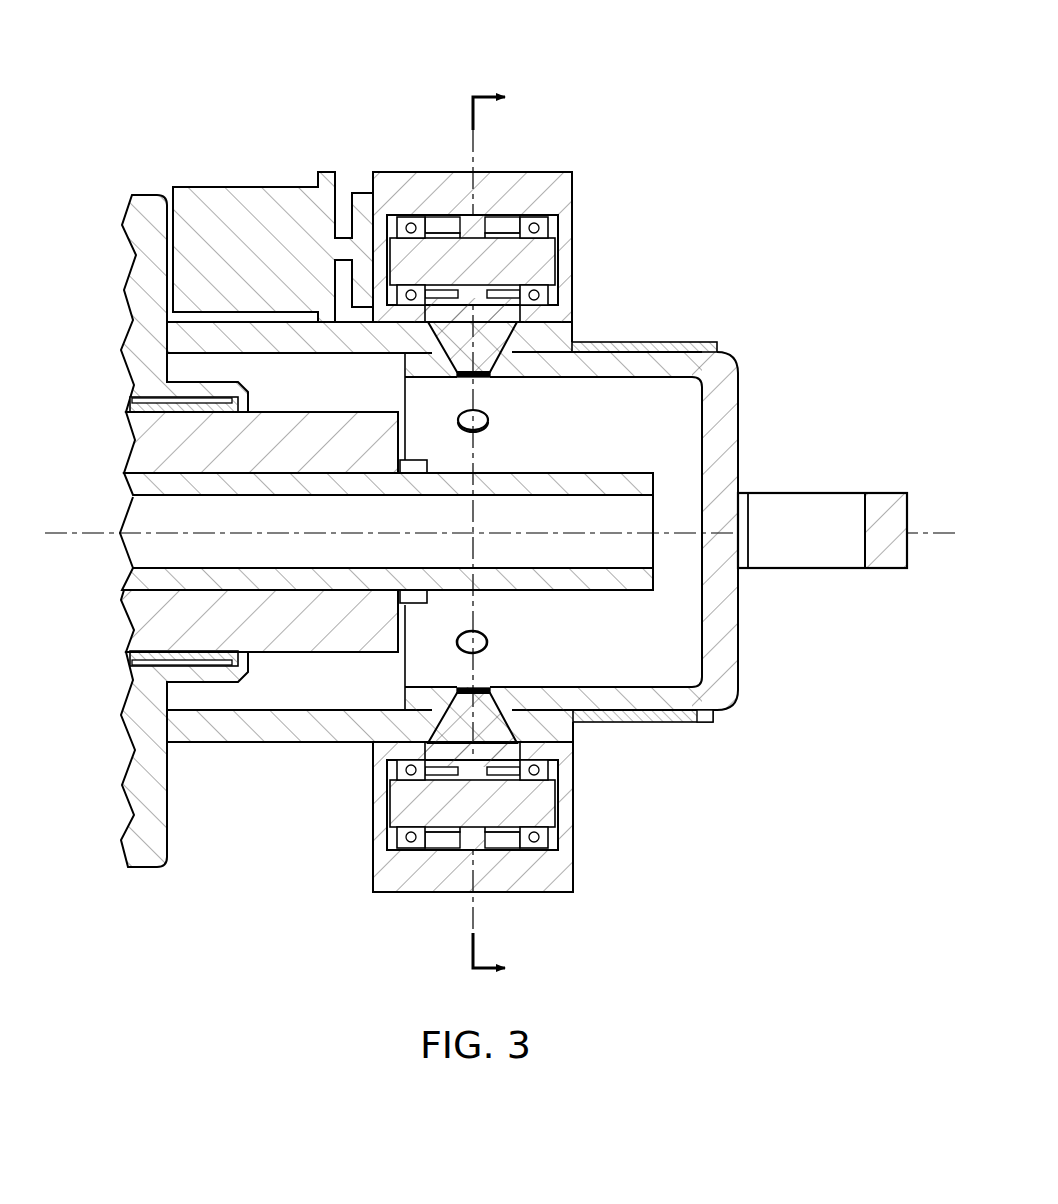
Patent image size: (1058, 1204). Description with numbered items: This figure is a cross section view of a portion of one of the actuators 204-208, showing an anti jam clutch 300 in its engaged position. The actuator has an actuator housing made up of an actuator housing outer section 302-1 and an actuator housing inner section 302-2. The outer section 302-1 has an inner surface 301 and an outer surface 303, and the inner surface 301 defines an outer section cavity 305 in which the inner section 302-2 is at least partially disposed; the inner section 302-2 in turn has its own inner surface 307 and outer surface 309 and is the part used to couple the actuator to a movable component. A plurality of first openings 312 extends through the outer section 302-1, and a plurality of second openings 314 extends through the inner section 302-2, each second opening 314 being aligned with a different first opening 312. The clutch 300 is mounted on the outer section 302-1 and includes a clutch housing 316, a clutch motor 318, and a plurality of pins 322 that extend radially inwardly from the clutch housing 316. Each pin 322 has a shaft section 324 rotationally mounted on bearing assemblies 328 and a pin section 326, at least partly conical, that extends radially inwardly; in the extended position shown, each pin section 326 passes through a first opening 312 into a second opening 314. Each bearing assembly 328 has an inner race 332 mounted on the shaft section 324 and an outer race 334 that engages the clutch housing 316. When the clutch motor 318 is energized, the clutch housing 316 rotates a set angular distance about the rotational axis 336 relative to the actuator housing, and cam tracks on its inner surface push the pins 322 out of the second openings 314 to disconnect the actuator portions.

The actuator 204-208 is at (128, 113).
The anti jam clutch 300 is at (303, 123).
The inner surface 301 is at (265, 353).
The actuator housing outer section 302-1 is at (718, 352).
The actuator housing inner section 302-2 is at (740, 685).
The outer surface 303 is at (672, 342).
The outer section cavity 305 is at (288, 692).
The inner surface 307 is at (657, 678).
The outer surface 309 is at (698, 722).
The first opening 312 is at (513, 342).
The second opening 314 is at (476, 640).
The clutch housing 316 is at (533, 172).
The clutch motor 318 is at (218, 187).
The pin 322 is at (438, 217).
The shaft section 324 is at (547, 268).
The pin section 326 is at (460, 360).
The bearing assembly 328 is at (407, 208).
The inner race 332 is at (545, 828).
The outer race 334 is at (533, 847).
The rotational axis 336 is at (917, 532).